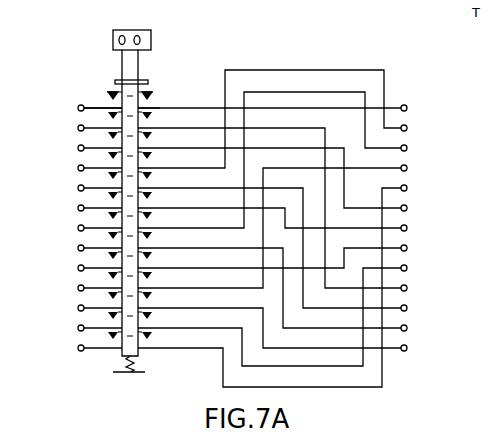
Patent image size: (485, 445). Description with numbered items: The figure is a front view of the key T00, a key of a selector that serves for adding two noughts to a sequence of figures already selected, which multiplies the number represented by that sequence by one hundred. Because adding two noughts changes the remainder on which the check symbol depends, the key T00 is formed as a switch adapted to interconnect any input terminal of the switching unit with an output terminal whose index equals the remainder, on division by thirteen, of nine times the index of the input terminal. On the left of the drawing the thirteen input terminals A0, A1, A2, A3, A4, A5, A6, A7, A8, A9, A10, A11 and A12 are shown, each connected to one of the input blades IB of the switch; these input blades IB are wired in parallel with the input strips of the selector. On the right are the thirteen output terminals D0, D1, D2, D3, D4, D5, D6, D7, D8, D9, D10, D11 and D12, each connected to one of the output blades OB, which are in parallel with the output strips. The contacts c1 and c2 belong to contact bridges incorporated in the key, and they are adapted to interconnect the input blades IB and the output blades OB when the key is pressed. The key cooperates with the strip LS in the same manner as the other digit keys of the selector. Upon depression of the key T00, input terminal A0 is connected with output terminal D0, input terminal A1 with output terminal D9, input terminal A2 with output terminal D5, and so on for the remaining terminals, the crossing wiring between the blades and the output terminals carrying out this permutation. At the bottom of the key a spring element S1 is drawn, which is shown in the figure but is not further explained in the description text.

The key T00 is at (132, 31).
The strip LS is at (146, 80).
The contact c1 is at (108, 82).
The contact c2 is at (160, 88).
The input blades IB is at (102, 100).
The output blades OB is at (164, 105).
The spring / ground switch S1 is at (137, 372).
The input terminal A0 is at (88, 108).
The input terminal A1 is at (88, 128).
The input terminal A2 is at (88, 148).
The input terminal A3 is at (88, 168).
The input terminal A4 is at (88, 188).
The input terminal A5 is at (88, 208).
The input terminal A6 is at (88, 228).
The input terminal A7 is at (88, 248).
The input terminal A8 is at (88, 268).
The input terminal A9 is at (88, 288).
The input terminal A10 is at (87, 308).
The input terminal A11 is at (87, 328).
The input terminal A12 is at (87, 348).
The output terminal D0 is at (282, 108).
The output terminal D1 is at (282, 119).
The output terminal D2 is at (282, 160).
The output terminal D3 is at (282, 224).
The output terminal D4 is at (282, 283).
The output terminal D5 is at (282, 182).
The output terminal D6 is at (282, 222).
The output terminal D7 is at (282, 254).
The output terminal D8 is at (282, 313).
The output terminal D9 is at (282, 212).
The output terminal D10 is at (285, 252).
The output terminal D11 is at (285, 292).
The output terminal D12 is at (285, 332).